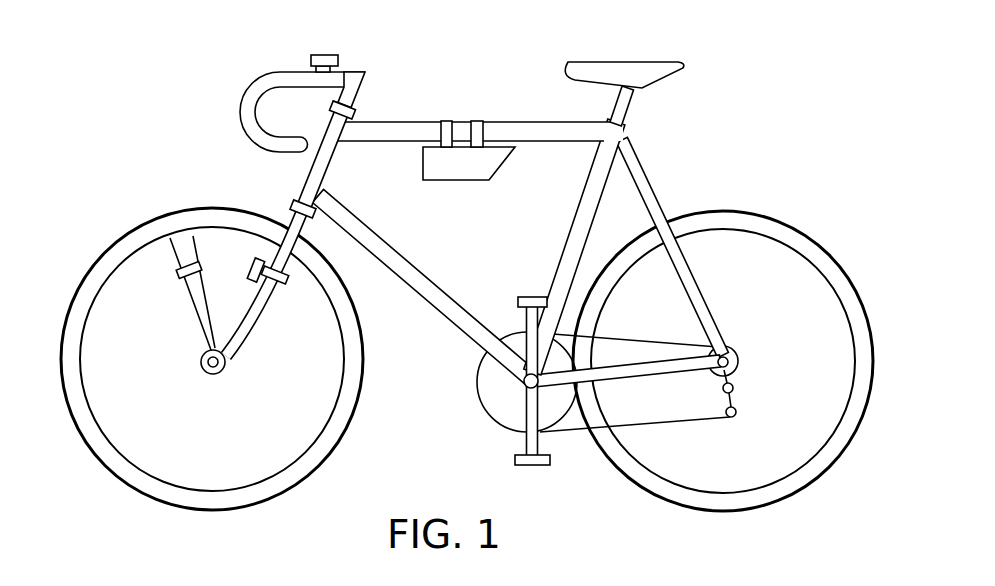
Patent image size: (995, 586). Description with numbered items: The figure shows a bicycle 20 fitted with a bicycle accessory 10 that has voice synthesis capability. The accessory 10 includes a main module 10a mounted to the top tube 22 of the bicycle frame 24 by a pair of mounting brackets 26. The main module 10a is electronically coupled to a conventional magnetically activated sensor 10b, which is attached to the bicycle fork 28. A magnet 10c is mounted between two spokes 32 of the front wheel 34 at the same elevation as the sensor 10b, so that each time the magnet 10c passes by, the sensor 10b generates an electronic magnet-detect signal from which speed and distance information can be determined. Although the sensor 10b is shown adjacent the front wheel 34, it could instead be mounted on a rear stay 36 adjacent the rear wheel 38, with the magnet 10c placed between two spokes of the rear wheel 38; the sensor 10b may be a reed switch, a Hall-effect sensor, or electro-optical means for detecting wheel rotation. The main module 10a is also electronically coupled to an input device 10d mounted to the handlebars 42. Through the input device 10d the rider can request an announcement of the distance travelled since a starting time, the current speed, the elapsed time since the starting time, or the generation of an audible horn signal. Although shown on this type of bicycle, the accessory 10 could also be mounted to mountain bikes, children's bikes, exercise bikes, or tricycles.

The bicycle accessory 10 is at (476, 136).
The main module 10a is at (478, 168).
The magnetically activated sensor 10b is at (250, 262).
The magnet 10c is at (180, 273).
The input device 10d is at (325, 53).
The bicycle 20 is at (537, 252).
The top tube 22 is at (370, 128).
The bicycle frame 24 is at (645, 183).
The mounting brackets 26 is at (477, 130).
The bicycle fork 28 is at (257, 320).
The spokes 32 is at (197, 305).
The front wheel 34 is at (90, 267).
The rear stay 36 is at (700, 288).
The rear wheel 38 is at (803, 232).
The handlebars 42 is at (258, 80).